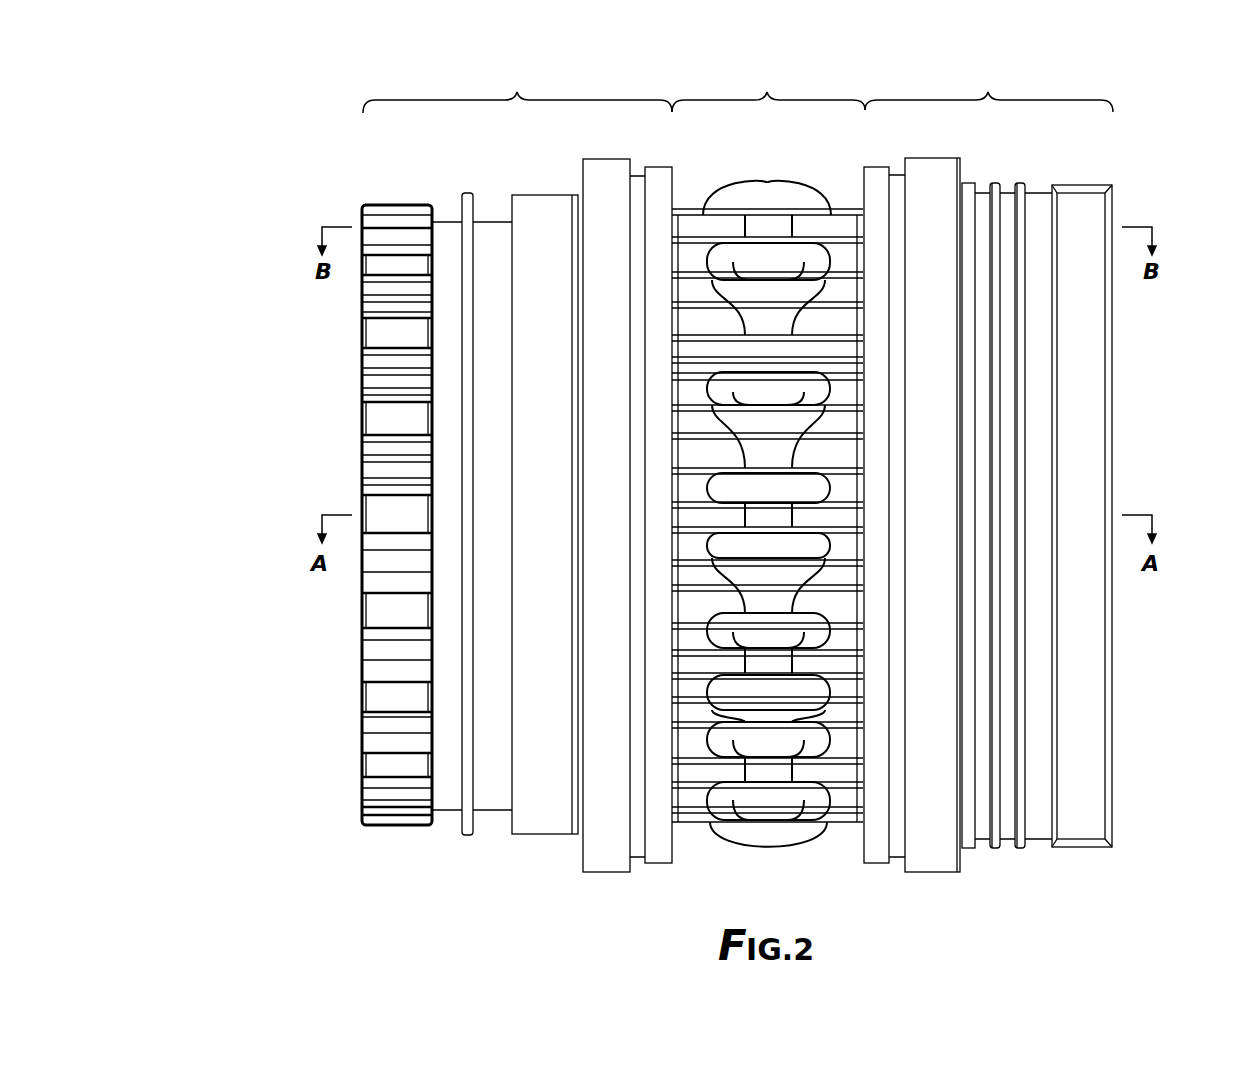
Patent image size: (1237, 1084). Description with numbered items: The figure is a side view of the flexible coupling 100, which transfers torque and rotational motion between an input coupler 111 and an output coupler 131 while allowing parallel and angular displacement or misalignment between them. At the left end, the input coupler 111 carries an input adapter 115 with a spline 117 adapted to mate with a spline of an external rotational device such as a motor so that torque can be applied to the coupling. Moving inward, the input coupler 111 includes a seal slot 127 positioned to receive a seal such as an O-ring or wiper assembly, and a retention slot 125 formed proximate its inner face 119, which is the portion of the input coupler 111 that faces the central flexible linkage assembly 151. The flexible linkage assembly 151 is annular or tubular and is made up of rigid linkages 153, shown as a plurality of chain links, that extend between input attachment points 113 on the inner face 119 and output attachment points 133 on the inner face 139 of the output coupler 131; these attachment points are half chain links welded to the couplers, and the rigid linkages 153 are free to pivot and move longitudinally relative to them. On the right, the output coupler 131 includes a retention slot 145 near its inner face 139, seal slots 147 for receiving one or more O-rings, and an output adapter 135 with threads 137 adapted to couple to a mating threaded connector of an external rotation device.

The flexible coupling 100 is at (255, 130).
The input coupler 111 is at (517, 92).
The flexible linkage assembly 151 is at (767, 92).
The output coupler 131 is at (988, 92).
The input adapter 115 is at (342, 691).
The spline 117 is at (385, 825).
The seal slot 127 is at (488, 823).
The retention slot 125 is at (638, 857).
The input attachment points 113 is at (692, 823).
The rigid linkages 153 is at (757, 838).
The inner face 119 is at (680, 183).
The inner face 139 is at (860, 185).
The output attachment points 133 is at (843, 817).
The retention slot 145 is at (897, 863).
The output adapter 135 is at (1148, 711).
The seal slots 147 is at (983, 847).
The threads 137 is at (1080, 832).